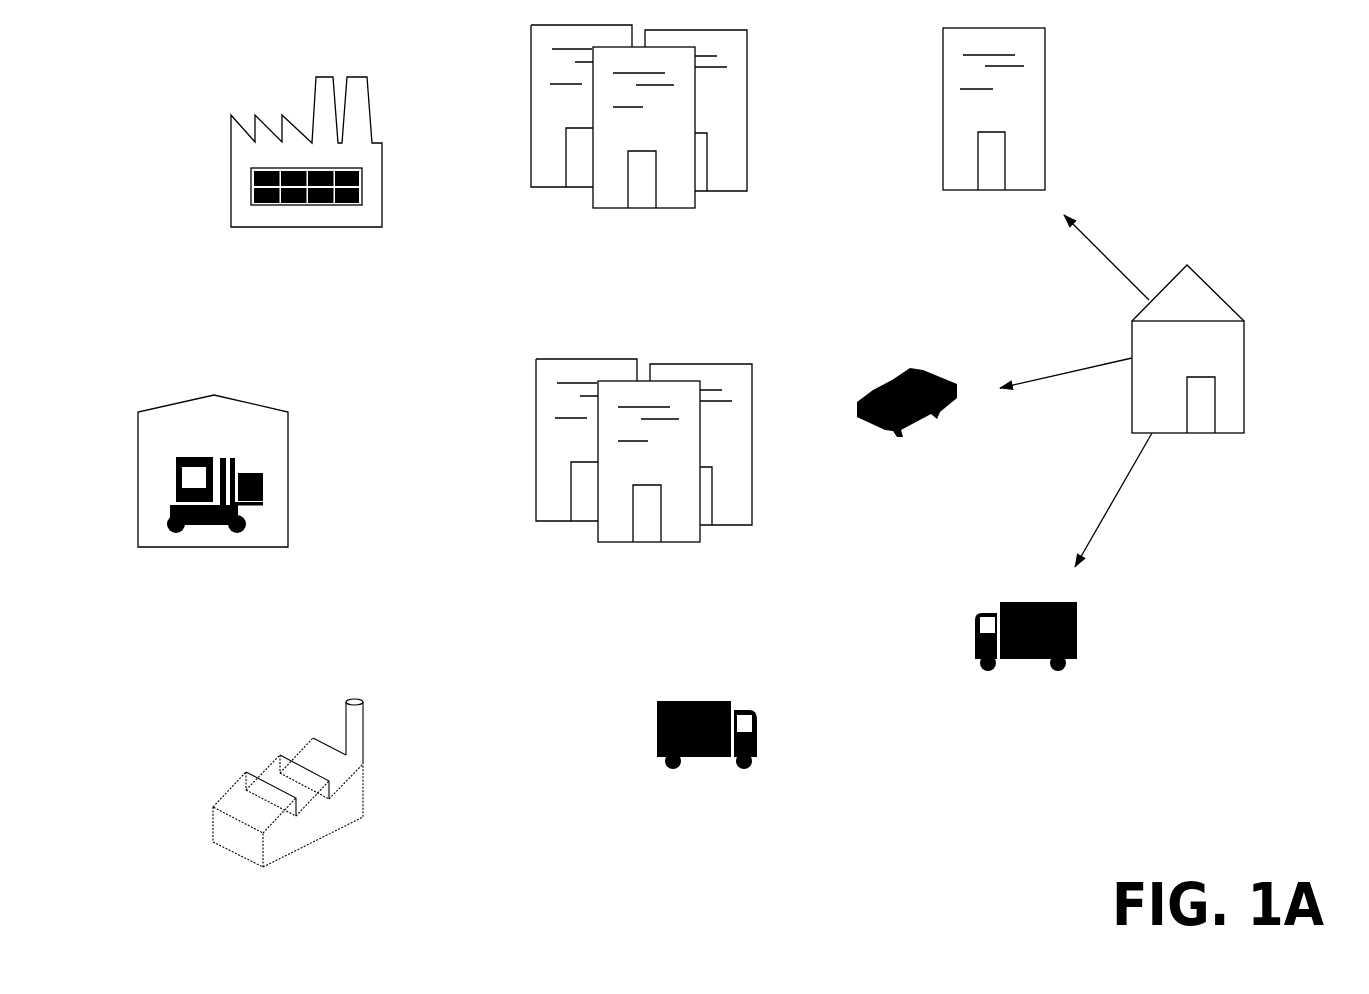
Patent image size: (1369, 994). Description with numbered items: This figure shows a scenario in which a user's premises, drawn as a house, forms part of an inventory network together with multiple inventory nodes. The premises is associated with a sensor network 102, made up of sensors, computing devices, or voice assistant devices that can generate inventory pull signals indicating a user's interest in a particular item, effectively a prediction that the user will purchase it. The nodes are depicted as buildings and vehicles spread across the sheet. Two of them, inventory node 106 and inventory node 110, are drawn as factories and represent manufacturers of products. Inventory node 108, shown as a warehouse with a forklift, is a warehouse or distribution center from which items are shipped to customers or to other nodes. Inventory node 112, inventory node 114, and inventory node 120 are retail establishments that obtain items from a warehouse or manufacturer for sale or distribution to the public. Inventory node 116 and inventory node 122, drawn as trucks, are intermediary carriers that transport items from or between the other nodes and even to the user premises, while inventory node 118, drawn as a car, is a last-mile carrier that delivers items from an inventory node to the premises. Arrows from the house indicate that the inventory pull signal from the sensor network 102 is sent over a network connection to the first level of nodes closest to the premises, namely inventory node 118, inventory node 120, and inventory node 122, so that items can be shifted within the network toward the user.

The sensor network 102 is at (1215, 289).
The inventory node 106 is at (342, 227).
The inventory node 108 is at (258, 403).
The inventory node 110 is at (353, 698).
The inventory node 112 is at (679, 208).
The inventory node 114 is at (722, 364).
The inventory node 116 is at (718, 695).
The inventory node 118 is at (908, 370).
The inventory node 120 is at (1045, 77).
The inventory node 122 is at (1010, 602).